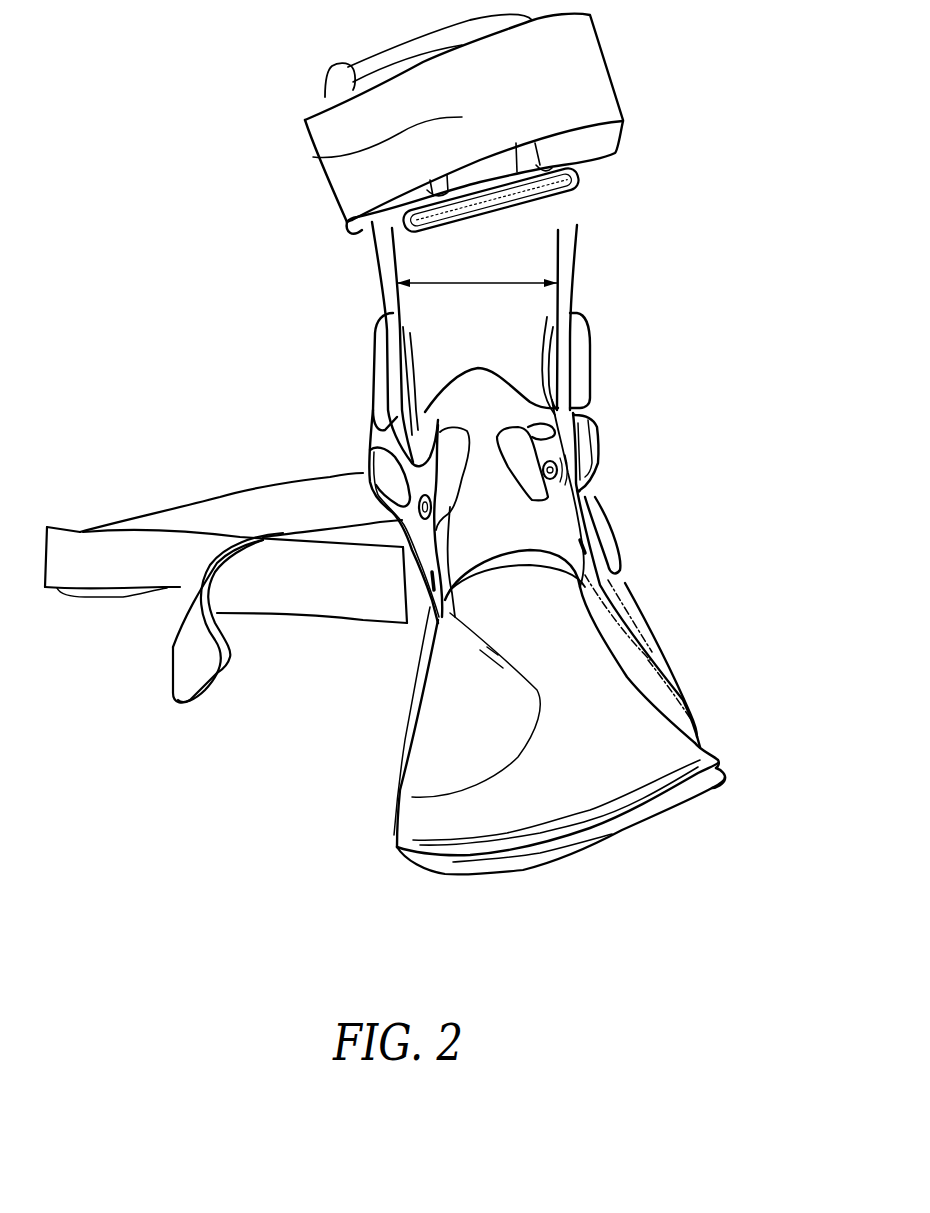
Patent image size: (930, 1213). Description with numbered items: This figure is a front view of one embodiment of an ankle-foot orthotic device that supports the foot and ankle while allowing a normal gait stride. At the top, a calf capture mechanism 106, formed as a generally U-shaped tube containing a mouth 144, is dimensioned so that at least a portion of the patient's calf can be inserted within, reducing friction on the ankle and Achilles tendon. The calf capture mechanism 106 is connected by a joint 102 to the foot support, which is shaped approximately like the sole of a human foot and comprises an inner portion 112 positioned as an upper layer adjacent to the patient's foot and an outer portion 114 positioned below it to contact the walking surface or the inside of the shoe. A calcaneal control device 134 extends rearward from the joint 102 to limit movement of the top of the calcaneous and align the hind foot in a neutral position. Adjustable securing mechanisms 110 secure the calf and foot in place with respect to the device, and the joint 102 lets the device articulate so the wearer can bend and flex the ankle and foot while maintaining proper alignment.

The adjustable securing mechanism 110 is at (318, 162).
The calf capture mechanism 106 is at (483, 338).
The mouth 144 is at (478, 285).
The joint 102 is at (368, 455).
The calcaneal control device 134 is at (522, 457).
The inner portion 112 is at (623, 758).
The outer portion 114 is at (597, 853).